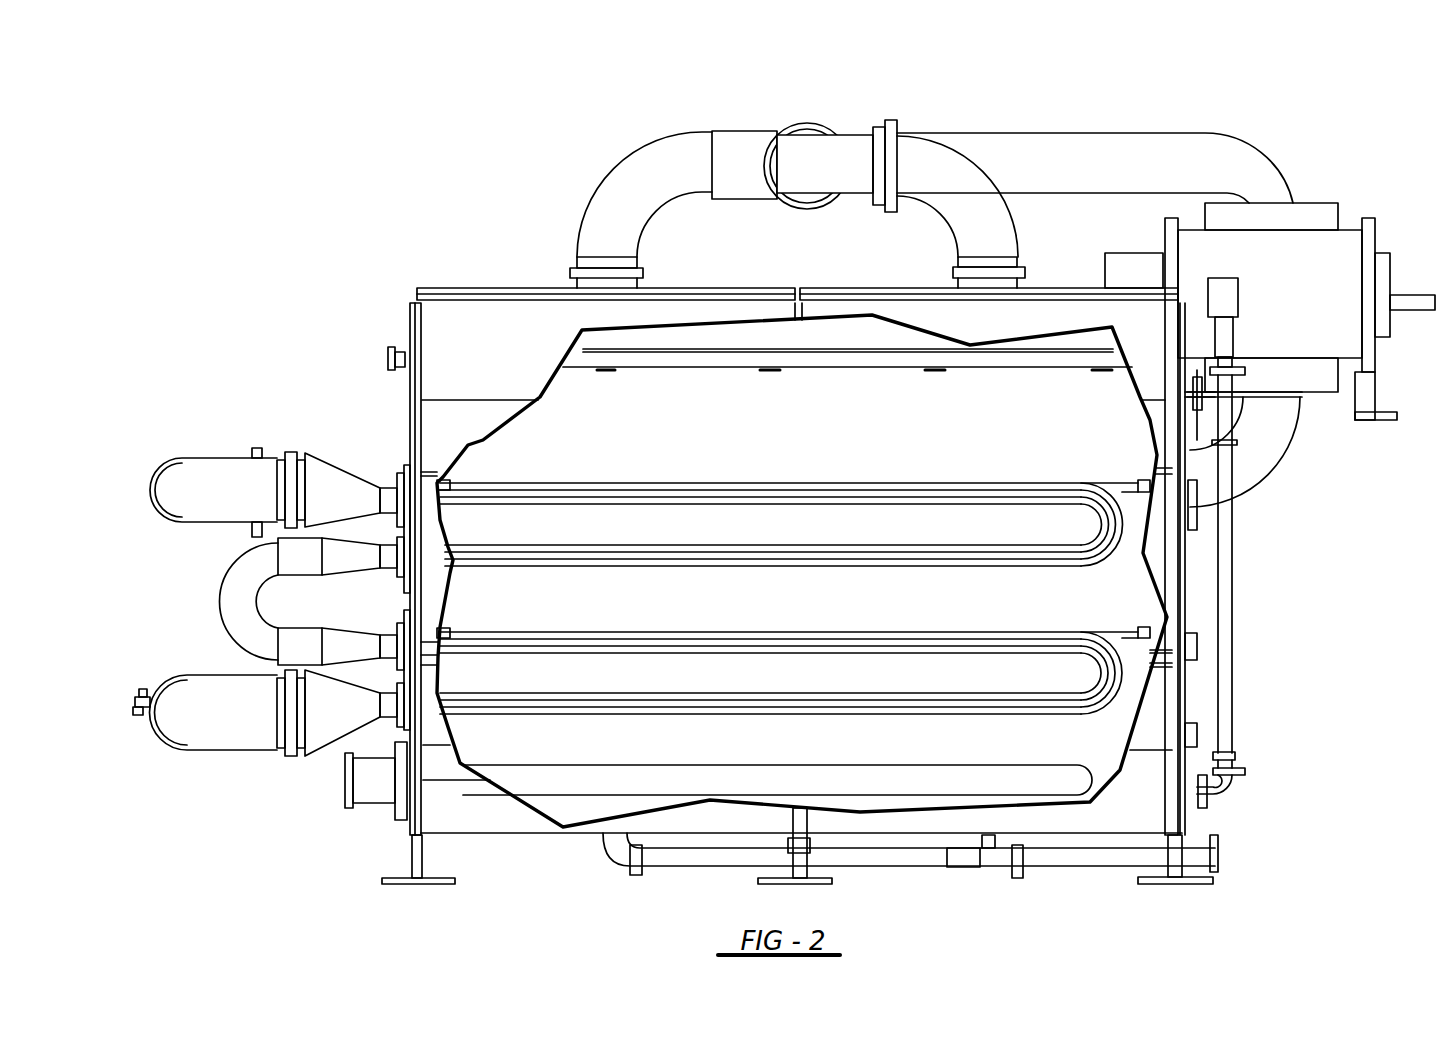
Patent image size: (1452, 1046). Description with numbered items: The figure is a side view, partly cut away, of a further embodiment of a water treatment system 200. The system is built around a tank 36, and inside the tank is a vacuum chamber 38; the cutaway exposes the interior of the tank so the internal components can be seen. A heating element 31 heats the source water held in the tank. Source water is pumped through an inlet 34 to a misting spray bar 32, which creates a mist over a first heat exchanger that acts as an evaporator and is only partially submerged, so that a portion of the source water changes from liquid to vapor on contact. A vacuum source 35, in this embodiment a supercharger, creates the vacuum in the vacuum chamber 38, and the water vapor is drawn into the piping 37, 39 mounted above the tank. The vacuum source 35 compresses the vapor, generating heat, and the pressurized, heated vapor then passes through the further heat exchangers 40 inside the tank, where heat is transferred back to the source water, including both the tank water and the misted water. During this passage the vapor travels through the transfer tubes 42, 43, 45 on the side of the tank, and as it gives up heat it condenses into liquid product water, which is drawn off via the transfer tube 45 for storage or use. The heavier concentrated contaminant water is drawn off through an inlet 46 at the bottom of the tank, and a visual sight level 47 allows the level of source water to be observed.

The water treatment system 200 is at (408, 96).
The heating element 31 is at (370, 803).
The misting spray bar 32 is at (593, 348).
The inlet 34 is at (392, 372).
The vacuum source 35 is at (1377, 228).
The tank 36 is at (487, 290).
The piping 37 is at (620, 163).
The vacuum chamber 38 is at (557, 367).
The piping 39 is at (1258, 148).
The further heat exchangers 40 is at (1113, 543).
The transfer tube 42 is at (158, 507).
The transfer tube 43 is at (220, 623).
The transfer tube 45 is at (232, 755).
The inlet 46 is at (1220, 862).
The visual sight level 47 is at (1233, 525).